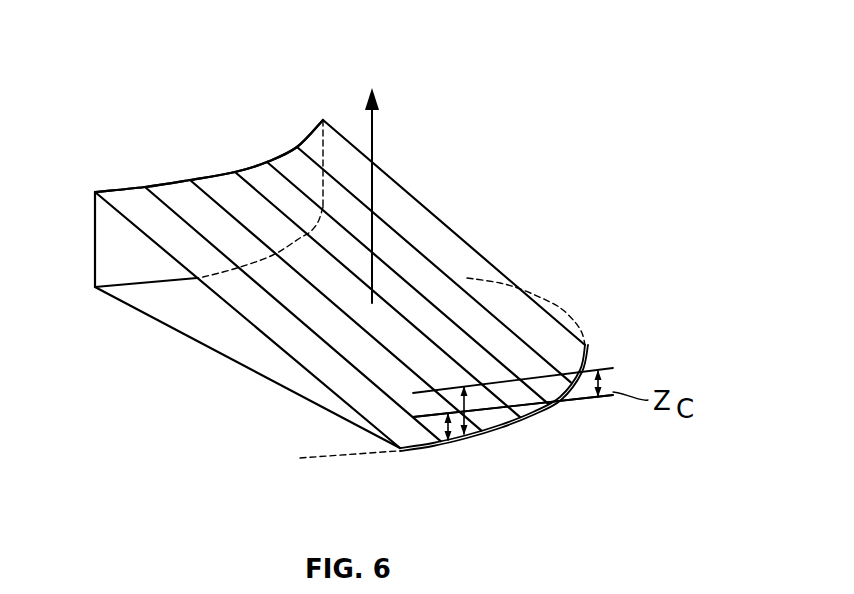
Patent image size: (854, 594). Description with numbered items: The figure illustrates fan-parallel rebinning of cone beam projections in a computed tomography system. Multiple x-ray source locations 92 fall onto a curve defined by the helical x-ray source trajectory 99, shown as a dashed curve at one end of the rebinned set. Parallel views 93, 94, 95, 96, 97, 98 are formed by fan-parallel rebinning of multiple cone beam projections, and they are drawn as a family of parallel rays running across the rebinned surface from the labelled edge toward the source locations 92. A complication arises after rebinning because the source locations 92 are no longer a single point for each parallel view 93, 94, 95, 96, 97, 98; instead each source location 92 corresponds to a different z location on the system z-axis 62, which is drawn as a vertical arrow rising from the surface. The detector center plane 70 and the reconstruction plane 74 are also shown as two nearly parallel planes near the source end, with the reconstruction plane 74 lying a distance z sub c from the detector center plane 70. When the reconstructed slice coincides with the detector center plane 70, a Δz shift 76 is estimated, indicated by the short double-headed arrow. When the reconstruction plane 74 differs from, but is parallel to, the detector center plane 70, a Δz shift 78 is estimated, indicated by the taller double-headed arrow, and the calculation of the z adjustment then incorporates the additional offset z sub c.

The system z-axis 62 is at (375, 145).
The detector center plane 70 is at (573, 401).
The reconstruction plane 74 is at (600, 370).
The Δz shift 76 is at (443, 432).
The Δz shift 78 is at (470, 413).
The x-ray source locations 92 is at (588, 352).
The parallel view 93 is at (320, 128).
The parallel view 94 is at (292, 157).
The parallel view 95 is at (266, 164).
The parallel view 96 is at (222, 181).
The parallel view 97 is at (172, 191).
The parallel view 98 is at (112, 196).
The helical x-ray source trajectory 99 is at (563, 303).